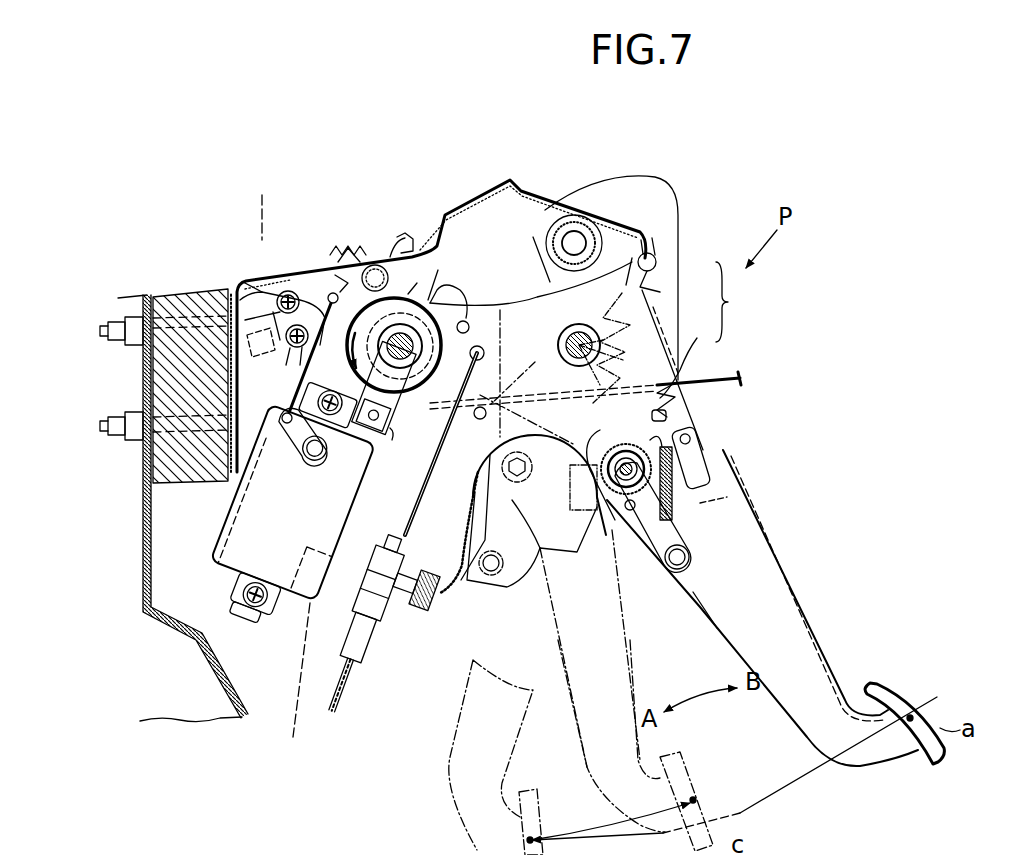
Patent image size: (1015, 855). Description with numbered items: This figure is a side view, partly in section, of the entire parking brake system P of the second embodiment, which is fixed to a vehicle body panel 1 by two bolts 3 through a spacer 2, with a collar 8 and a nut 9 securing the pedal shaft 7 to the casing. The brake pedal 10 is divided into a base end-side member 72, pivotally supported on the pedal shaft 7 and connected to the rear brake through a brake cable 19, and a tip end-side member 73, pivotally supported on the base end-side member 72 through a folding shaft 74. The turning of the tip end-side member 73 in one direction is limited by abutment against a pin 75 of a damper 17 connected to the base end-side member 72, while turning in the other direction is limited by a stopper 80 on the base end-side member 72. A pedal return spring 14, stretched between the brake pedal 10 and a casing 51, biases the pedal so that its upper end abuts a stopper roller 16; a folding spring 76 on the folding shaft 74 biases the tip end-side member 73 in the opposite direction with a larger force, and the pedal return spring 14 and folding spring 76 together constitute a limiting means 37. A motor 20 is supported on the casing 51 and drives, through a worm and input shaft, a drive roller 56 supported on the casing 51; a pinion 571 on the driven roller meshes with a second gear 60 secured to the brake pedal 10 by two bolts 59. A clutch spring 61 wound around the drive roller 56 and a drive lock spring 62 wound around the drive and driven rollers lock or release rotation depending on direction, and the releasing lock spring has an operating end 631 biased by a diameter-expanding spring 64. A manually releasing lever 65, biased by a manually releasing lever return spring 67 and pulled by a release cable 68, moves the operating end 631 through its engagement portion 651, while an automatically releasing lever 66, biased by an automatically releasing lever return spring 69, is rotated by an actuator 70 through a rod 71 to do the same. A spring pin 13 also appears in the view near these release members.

The vehicle body panel 1 is at (142, 578).
The spacer 2 is at (178, 303).
The bolts 3 is at (112, 328).
The pedal shaft 7 is at (579, 325).
The collar 8 is at (259, 210).
The nut 9 is at (531, 250).
The brake pedal 10 is at (780, 407).
The spring pin 13 is at (340, 282).
The pedal return spring 14 is at (660, 294).
The stopper roller 16 is at (552, 236).
The damper 17 is at (543, 373).
The brake cable 19 is at (336, 688).
The motor 20 is at (310, 614).
The limiting means 37 is at (739, 302).
The casing 51 is at (478, 207).
The drive roller 56 is at (440, 312).
The bolts 59 is at (470, 327).
The second gear 60 is at (446, 462).
The clutch spring 61 is at (282, 324).
The drive lock spring 62 is at (262, 292).
The operating end 631 is at (286, 290).
The diameter-expanding spring 64 is at (350, 262).
The manually releasing lever 65 is at (386, 440).
The engagement portion 651 is at (426, 275).
The automatically releasing lever 66 is at (302, 266).
The manually releasing lever return spring 67 is at (292, 350).
The release cable 68 is at (397, 428).
The automatically releasing lever return spring 69 is at (378, 248).
The actuator 70 is at (298, 514).
The rod 71 is at (283, 382).
The base end-side member 72 is at (708, 416).
The tip end-side member 73 is at (758, 512).
The folding shaft 74 is at (628, 456).
The pin 75 is at (667, 572).
The folding spring 76 is at (689, 352).
The stopper 80 is at (680, 400).
The pinion 571 is at (454, 275).